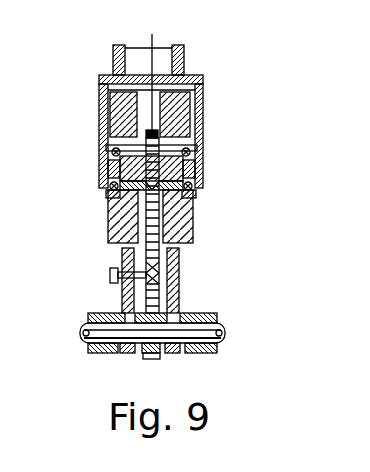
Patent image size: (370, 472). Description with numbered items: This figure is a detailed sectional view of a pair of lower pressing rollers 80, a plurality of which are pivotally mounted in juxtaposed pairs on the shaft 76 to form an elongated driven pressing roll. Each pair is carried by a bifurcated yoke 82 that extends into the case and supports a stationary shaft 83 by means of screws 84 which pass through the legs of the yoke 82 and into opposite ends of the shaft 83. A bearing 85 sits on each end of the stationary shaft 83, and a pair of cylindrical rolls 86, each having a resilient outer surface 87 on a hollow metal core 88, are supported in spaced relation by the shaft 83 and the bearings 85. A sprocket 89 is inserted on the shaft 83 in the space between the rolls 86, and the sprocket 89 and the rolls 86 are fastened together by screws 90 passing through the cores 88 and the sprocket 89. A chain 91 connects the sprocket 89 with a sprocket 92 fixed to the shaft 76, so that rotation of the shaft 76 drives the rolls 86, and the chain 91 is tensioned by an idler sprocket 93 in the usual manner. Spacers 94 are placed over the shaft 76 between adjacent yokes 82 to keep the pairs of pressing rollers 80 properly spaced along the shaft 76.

The shaft 76 is at (222, 328).
The lower pressing rollers 80 is at (79, 65).
The bifurcated yoke 82 is at (121, 258).
The stationary shaft 83 is at (205, 180).
The screws 84 is at (104, 170).
The bearing 85 is at (112, 190).
The cylindrical rolls 86 is at (123, 107).
The resilient outer surface 87 is at (125, 123).
The hollow metal core 88 is at (110, 200).
The sprocket 89 is at (154, 76).
The screws 90 is at (104, 148).
The chain 91 is at (159, 253).
The sprocket 92 is at (151, 359).
The idler sprocket 93 is at (153, 272).
The spacers 94 is at (100, 351).